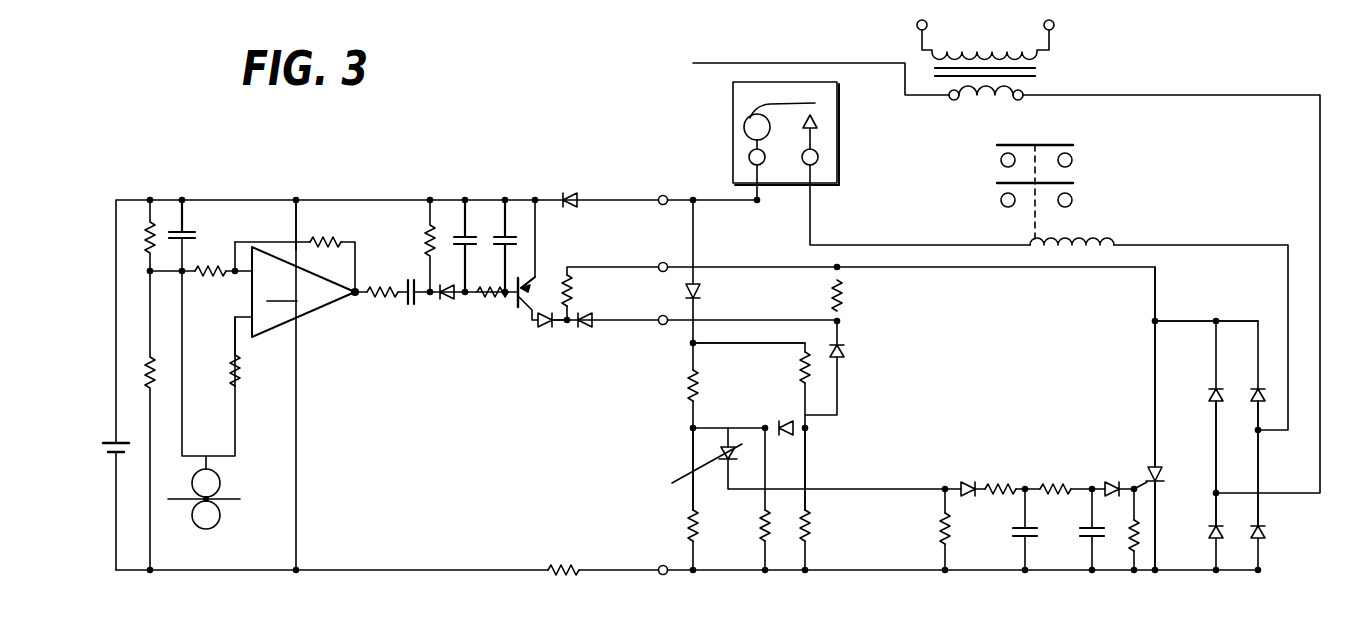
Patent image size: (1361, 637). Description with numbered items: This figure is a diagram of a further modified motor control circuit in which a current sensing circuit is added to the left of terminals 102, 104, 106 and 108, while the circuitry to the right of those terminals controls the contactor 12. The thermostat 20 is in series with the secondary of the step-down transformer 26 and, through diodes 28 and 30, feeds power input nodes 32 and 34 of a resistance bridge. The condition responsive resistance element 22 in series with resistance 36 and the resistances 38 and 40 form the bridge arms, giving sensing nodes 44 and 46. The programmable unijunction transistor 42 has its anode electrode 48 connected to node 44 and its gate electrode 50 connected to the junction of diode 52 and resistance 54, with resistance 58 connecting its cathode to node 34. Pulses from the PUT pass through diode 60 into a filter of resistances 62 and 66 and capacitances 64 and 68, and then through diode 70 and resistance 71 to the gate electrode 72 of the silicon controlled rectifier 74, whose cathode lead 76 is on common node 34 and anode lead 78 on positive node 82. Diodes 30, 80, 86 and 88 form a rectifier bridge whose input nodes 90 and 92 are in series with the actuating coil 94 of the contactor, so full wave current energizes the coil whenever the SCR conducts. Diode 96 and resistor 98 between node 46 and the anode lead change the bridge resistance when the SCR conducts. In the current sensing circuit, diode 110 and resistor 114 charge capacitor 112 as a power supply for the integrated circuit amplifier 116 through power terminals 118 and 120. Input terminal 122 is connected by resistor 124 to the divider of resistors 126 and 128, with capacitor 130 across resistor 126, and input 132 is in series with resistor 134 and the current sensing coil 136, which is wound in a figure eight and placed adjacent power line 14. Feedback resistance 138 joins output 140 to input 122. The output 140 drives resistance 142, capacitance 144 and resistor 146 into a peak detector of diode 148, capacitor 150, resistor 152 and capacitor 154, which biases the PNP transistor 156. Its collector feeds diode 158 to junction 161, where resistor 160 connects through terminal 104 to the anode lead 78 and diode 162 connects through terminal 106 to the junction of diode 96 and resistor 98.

The contactor 12 is at (1087, 172).
The power line 14 is at (230, 498).
The thermostat 20 is at (838, 143).
The positive temperature co-efficient resistance element 22 is at (690, 372).
The step-down voltage transformer 26 is at (1036, 71).
The diode 28 is at (703, 291).
The diode 30 is at (1208, 533).
The power input node 32 is at (764, 342).
The common node 34 is at (723, 574).
The resistance 36 is at (690, 526).
The resistance 38 is at (812, 376).
The resistance 40 is at (806, 525).
The programmable unijunction transistor 42 is at (688, 471).
The sensing node 44 is at (692, 452).
The sensing node 46 is at (807, 468).
The anode electrode 48 is at (710, 427).
The gate electrode 50 is at (753, 428).
The diode 52 is at (783, 435).
The resistance 54 is at (763, 525).
The resistance 58 is at (943, 532).
The diode 60 is at (968, 482).
The resistance 62 is at (1002, 481).
The capacitance 64 is at (1015, 540).
The resistance 66 is at (1047, 485).
The capacitance 68 is at (1088, 538).
The diode 70 is at (1102, 480).
The resistance 71 is at (1133, 536).
The gate electrode 72 is at (1131, 487).
The silicon controlled rectifier 74 is at (1160, 472).
The cathode lead 76 is at (1156, 518).
The anode lead 78 is at (1156, 417).
The diode 80 is at (1208, 392).
The positive node 82 is at (1186, 320).
The diode 86 is at (1265, 532).
The diode 88 is at (1252, 390).
The input node 90 is at (1217, 456).
The input node 92 is at (1259, 456).
The actuating coil 94 is at (1116, 236).
The diode 96 is at (844, 347).
The resistor 98 is at (842, 292).
The terminal 102 is at (660, 197).
The terminal 104 is at (660, 261).
The terminal 106 is at (660, 316).
The terminal 108 is at (663, 575).
The diode 110 is at (572, 194).
The capacitor 112 is at (98, 446).
The resistor 114 is at (563, 565).
The integrated circuit amplifier 116 is at (303, 292).
The power terminal 118 is at (298, 217).
The power terminal 120 is at (304, 452).
The input terminal 122 is at (232, 268).
The resistor 124 is at (203, 277).
The resistor 126 is at (148, 235).
The resistor 128 is at (147, 371).
The capacitor 130 is at (187, 228).
The input 132 is at (238, 348).
The resistor 134 is at (237, 383).
The current sensing coil 136 is at (221, 516).
The reverse feedback resistance 138 is at (337, 231).
The output 140 is at (354, 296).
The resistance 142 is at (382, 300).
The capacitance 144 is at (408, 285).
The resistor 146 is at (426, 244).
The diode 148 is at (440, 302).
The capacitor 150 is at (462, 235).
The resistor 152 is at (482, 302).
The capacitor 154 is at (502, 232).
The PNP transistor 156 is at (520, 298).
The diode 158 is at (540, 325).
The resistor 160 is at (565, 280).
The junction 161 is at (568, 326).
The diode 162 is at (590, 325).